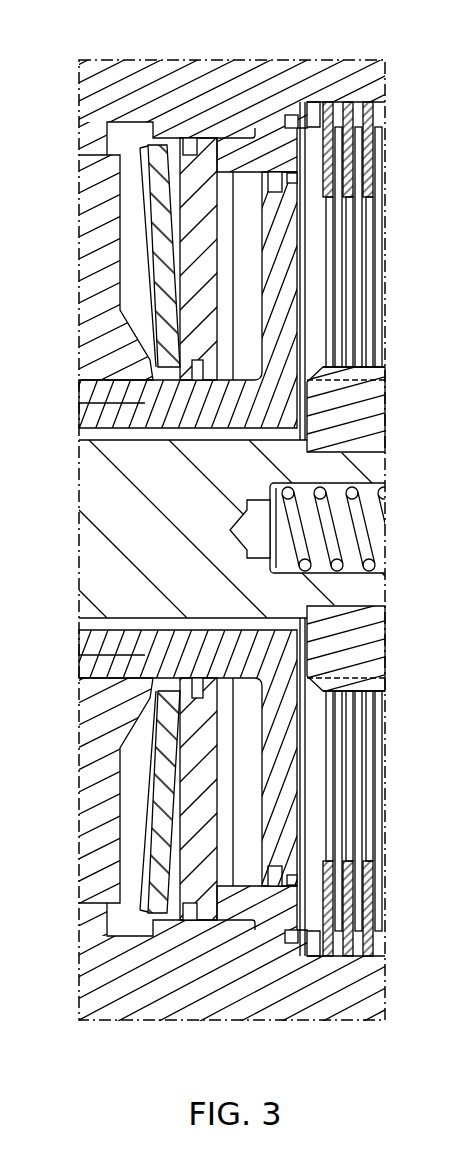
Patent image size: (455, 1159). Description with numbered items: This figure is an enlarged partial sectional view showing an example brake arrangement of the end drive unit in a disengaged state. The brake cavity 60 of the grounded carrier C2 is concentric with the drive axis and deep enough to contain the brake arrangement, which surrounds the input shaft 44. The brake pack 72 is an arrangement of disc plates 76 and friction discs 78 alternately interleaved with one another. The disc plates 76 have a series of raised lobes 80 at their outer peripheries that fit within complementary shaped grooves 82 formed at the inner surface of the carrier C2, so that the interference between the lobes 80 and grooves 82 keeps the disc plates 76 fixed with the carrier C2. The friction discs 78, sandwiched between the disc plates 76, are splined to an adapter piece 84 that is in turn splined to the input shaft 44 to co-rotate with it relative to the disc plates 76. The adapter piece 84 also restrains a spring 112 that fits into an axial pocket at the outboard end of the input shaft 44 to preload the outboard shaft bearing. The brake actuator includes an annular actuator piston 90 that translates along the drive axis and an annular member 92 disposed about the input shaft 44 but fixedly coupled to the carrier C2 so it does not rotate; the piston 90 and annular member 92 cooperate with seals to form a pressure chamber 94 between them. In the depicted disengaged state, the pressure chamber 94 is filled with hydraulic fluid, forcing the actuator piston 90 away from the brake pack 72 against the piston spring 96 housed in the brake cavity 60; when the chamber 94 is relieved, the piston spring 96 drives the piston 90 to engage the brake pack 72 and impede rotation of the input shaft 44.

The pressure chamber 94 is at (245, 197).
The grooves 82 is at (355, 107).
The raised lobes 80 is at (378, 112).
The piston spring 96 is at (160, 205).
The disc plates 76 is at (365, 162).
The friction discs 78 is at (375, 253).
The carrier C2 is at (227, 224).
The adapter piece 84 is at (368, 410).
The input shaft 44 is at (105, 502).
The spring 112 is at (365, 525).
The brake pack 72 is at (373, 773).
The annular member 92 is at (285, 822).
The brake cavity 60 is at (131, 916).
The actuator piston 90 is at (215, 902).